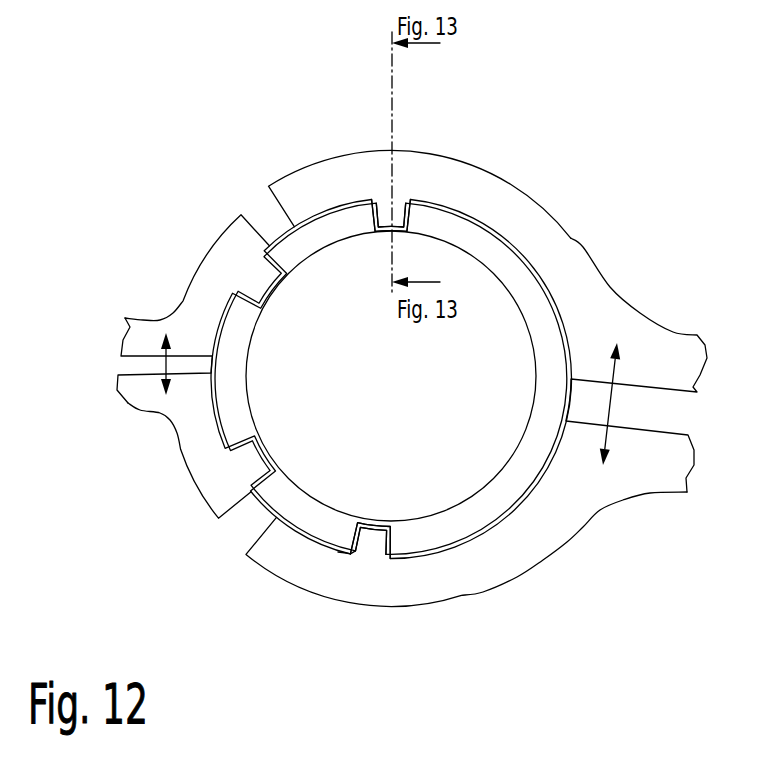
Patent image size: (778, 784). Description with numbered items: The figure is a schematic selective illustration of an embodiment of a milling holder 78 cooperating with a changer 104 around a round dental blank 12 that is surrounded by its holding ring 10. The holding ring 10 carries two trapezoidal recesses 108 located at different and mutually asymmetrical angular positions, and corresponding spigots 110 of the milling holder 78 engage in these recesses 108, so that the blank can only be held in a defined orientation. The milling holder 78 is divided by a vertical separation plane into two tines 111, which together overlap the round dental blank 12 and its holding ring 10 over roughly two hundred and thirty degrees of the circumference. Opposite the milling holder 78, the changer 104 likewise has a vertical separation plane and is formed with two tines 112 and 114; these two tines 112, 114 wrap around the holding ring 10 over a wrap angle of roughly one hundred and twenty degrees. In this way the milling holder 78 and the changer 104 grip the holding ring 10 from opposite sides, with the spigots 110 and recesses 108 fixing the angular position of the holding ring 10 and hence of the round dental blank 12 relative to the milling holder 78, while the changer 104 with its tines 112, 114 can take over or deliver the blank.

The holding ring 10 is at (538, 307).
The round dental blank 12 is at (402, 392).
The milling holder 78 is at (528, 218).
The changer 104 is at (152, 330).
The trapezoidal recesses 108 is at (400, 212).
The spigots 110 is at (364, 549).
The tines of the milling holder 111 is at (355, 172).
The tine of the changer 112 is at (200, 458).
The tine of the changer 114 is at (228, 248).